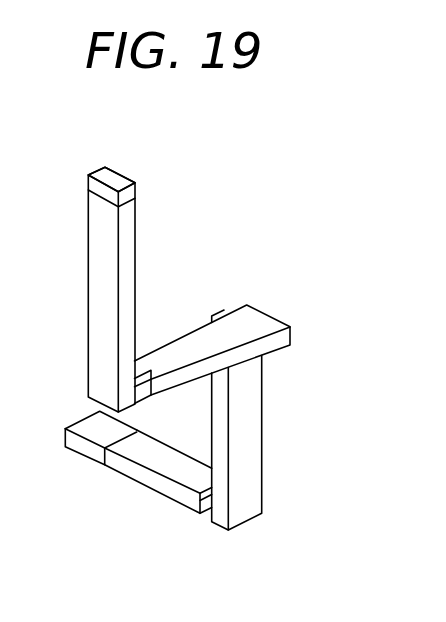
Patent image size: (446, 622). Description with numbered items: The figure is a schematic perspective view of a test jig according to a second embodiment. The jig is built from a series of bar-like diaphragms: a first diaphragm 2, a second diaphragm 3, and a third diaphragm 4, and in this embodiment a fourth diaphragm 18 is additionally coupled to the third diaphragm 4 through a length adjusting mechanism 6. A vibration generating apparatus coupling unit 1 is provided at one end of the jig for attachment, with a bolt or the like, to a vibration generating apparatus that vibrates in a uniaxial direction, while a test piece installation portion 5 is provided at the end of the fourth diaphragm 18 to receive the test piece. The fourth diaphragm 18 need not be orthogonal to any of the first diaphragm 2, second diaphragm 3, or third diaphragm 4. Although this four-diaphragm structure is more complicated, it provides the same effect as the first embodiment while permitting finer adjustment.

The vibration generating apparatus coupling unit 1 is at (85, 447).
The first diaphragm 2 is at (172, 487).
The second diaphragm 3 is at (262, 330).
The third diaphragm 4 is at (250, 485).
The test piece installation portion 5 is at (110, 175).
The length adjusting mechanism 6 is at (140, 377).
The fourth diaphragm 18 is at (128, 263).